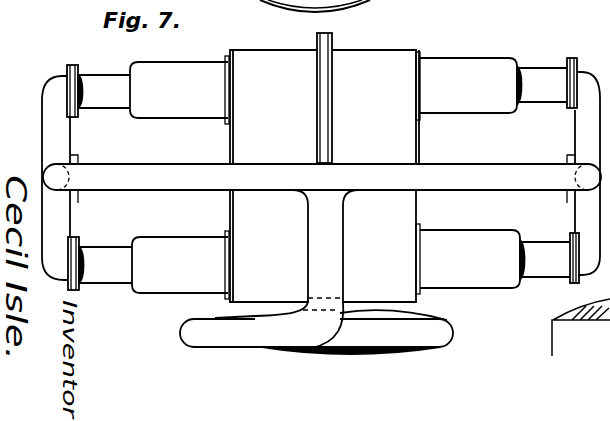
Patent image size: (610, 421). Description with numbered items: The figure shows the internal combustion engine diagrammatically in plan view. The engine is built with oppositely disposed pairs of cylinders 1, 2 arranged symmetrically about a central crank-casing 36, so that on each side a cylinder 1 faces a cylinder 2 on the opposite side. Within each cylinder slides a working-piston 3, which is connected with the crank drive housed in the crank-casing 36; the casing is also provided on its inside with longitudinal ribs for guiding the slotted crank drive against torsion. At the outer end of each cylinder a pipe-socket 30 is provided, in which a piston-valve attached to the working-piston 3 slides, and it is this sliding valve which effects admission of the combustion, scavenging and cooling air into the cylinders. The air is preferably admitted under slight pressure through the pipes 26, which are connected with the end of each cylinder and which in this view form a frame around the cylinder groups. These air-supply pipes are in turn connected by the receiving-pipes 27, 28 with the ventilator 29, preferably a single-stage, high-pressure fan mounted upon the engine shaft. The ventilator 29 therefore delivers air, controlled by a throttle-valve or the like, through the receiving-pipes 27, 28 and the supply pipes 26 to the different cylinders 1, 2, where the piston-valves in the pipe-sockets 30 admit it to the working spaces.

The cylinder 1 is at (193, 118).
The cylinder 2 is at (497, 112).
The working-piston 3 is at (100, 257).
The pipe 26 is at (42, 116).
The receiving-pipe 27 is at (240, 167).
The receiving-pipe 28 is at (345, 267).
The ventilator 29 is at (372, 353).
The pipe-socket 30 is at (102, 108).
The crank-casing 36 is at (383, 53).